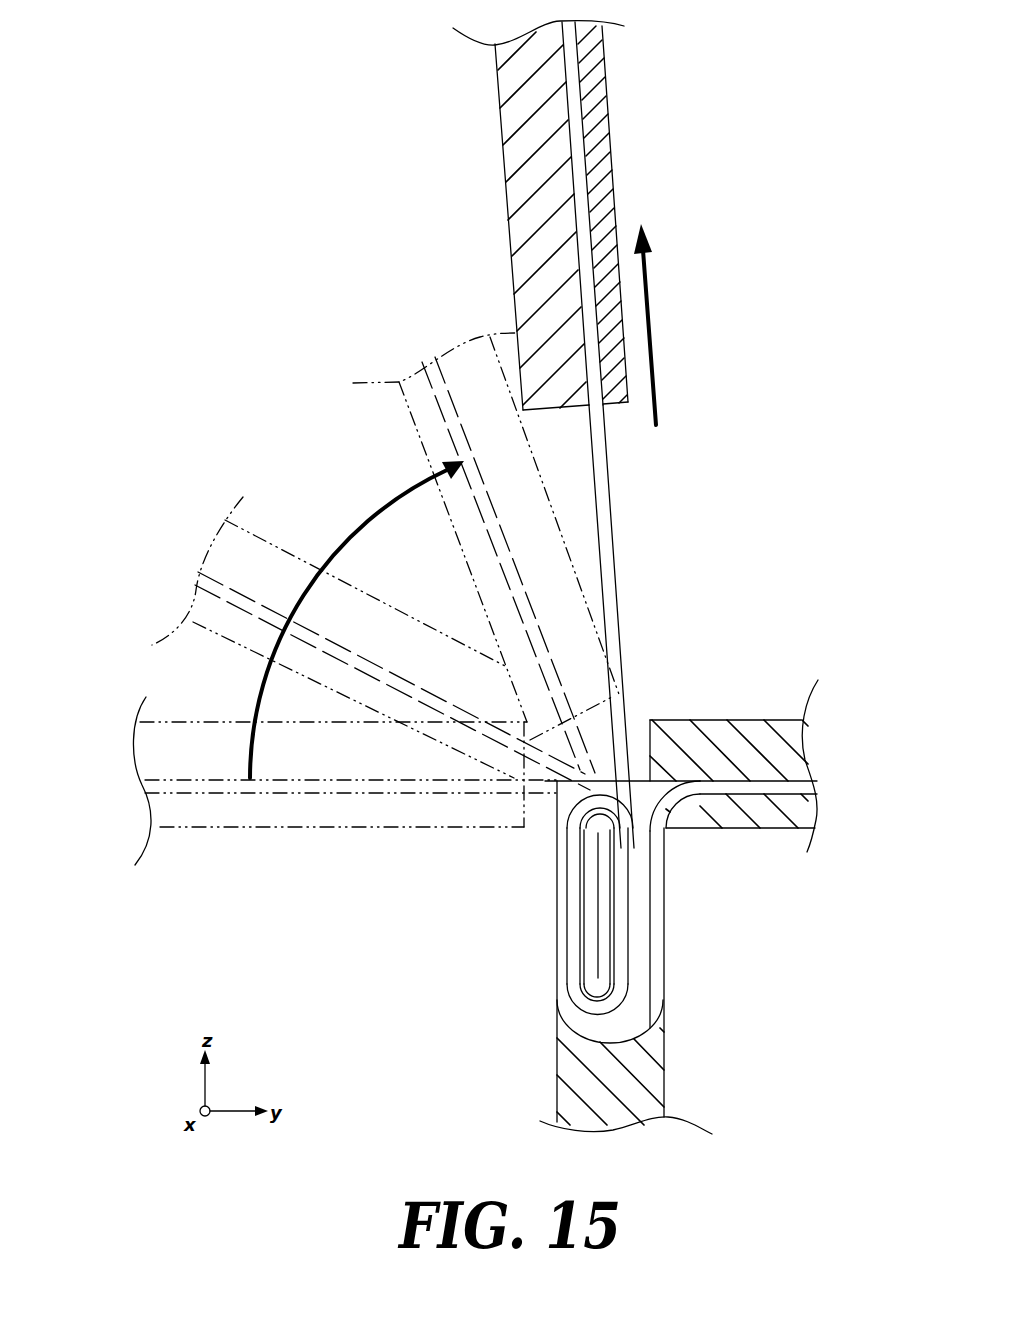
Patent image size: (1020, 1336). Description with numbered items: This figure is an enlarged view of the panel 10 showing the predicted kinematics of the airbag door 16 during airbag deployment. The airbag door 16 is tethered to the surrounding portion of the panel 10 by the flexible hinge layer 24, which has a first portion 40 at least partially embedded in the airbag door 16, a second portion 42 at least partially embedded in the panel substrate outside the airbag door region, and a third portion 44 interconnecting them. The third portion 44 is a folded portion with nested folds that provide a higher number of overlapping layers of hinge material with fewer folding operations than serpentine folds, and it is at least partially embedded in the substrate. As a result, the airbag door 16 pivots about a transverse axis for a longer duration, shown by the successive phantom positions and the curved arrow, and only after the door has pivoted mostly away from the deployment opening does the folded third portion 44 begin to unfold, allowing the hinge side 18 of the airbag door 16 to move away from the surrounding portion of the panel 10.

The panel 10 is at (66, 539).
The airbag door 16 is at (507, 163).
The hinge side 18 is at (585, 410).
The flexible hinge layer 24 is at (612, 548).
The first portion 40 is at (580, 146).
The second portion 42 is at (751, 788).
The third portion 44 is at (569, 944).